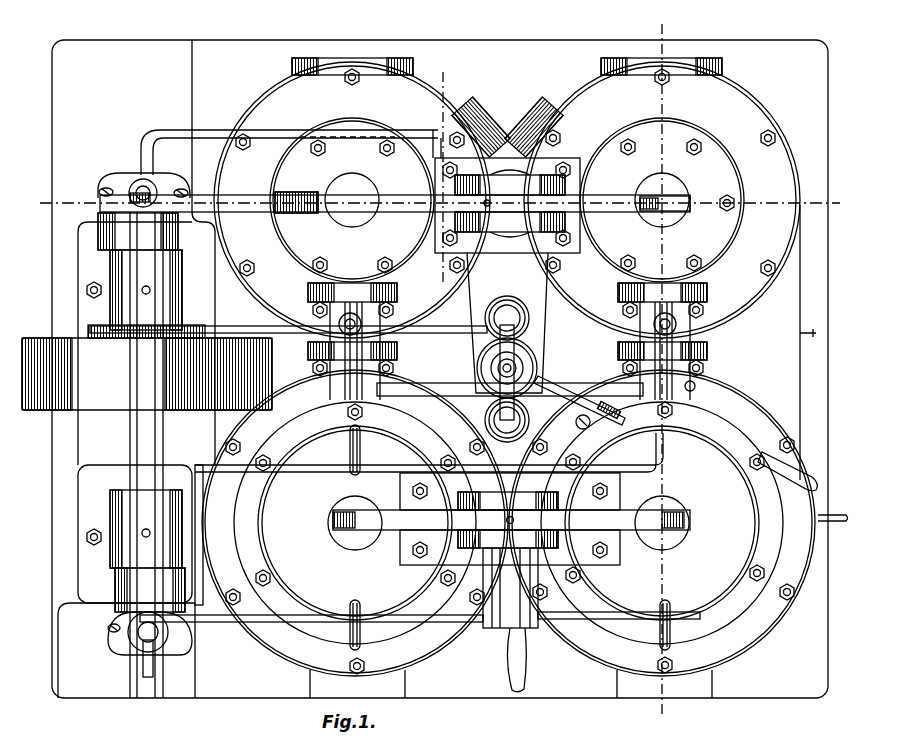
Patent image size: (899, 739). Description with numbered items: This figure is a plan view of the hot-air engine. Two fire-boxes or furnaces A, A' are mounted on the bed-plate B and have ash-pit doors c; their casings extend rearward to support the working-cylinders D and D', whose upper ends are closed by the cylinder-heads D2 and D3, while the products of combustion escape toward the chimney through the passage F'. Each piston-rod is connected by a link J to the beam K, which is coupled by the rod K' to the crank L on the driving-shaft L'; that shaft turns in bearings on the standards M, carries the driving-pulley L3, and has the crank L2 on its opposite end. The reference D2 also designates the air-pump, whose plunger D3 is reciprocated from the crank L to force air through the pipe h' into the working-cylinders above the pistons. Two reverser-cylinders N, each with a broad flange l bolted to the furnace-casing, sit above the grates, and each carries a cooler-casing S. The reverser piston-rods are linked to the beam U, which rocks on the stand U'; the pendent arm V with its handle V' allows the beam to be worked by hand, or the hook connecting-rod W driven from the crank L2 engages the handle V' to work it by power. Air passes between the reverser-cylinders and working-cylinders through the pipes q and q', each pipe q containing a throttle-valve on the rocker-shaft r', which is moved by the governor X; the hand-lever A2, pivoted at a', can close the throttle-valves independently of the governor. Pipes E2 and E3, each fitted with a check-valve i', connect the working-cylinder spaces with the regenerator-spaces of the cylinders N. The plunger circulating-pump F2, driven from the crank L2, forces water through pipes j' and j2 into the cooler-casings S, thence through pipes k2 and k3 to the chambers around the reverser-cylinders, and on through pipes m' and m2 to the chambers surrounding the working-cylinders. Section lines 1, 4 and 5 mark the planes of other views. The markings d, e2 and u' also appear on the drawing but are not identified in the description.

The bed-plate B is at (440, 369).
The ash-pit door c is at (515, 690).
The section line 1 1 is at (662, 371).
The section line 4 4 is at (434, 204).
The section line 5 5 is at (441, 178).
The cylinder head flange d is at (507, 200).
The working-cylinder D is at (662, 192).
The working-cylinder D' is at (352, 190).
The cylinder-head D2 is at (140, 185).
The cylinder-head D3 is at (352, 190).
The link J is at (672, 207).
The passage F' is at (507, 96).
The pipe h' is at (291, 142).
The beam K is at (395, 205).
The rod K' is at (404, 205).
The governor X is at (520, 364).
The rocker-shaft r' is at (490, 369).
The fire-box A' is at (288, 317).
The fire-box A is at (765, 354).
The hand-lever A2 is at (812, 476).
The pin e2 is at (809, 322).
The crank L is at (138, 231).
The standard M is at (134, 409).
The driving-shaft L' is at (135, 455).
The driving-pulley L3 is at (147, 367).
The crank L2 is at (150, 591).
The plunger circulating-pump F2 is at (140, 640).
The flange l is at (508, 523).
The reverser-cylinder N is at (506, 511).
The cooler-casing S is at (507, 523).
The beam U is at (510, 519).
The stand U' is at (444, 548).
The pendent arm V is at (510, 588).
The handle V' is at (529, 660).
The pipe j' is at (429, 519).
The pipe j2 is at (362, 450).
The pipe k3 is at (349, 640).
The pipe k2 is at (659, 640).
The hook connecting-rod W is at (420, 617).
The pipe E3 is at (345, 372).
The pipe m2 is at (365, 380).
The check-valve i' is at (502, 321).
The pipe q' is at (506, 319).
The pipe q is at (508, 390).
The pipe E2 is at (660, 290).
The pipe m' is at (643, 351).
The link u' is at (579, 400).
The pivot a' is at (583, 422).